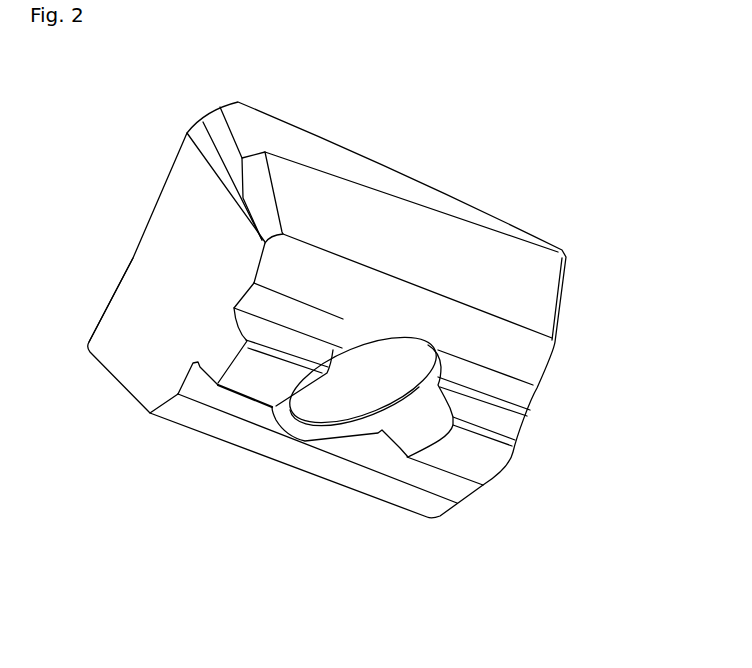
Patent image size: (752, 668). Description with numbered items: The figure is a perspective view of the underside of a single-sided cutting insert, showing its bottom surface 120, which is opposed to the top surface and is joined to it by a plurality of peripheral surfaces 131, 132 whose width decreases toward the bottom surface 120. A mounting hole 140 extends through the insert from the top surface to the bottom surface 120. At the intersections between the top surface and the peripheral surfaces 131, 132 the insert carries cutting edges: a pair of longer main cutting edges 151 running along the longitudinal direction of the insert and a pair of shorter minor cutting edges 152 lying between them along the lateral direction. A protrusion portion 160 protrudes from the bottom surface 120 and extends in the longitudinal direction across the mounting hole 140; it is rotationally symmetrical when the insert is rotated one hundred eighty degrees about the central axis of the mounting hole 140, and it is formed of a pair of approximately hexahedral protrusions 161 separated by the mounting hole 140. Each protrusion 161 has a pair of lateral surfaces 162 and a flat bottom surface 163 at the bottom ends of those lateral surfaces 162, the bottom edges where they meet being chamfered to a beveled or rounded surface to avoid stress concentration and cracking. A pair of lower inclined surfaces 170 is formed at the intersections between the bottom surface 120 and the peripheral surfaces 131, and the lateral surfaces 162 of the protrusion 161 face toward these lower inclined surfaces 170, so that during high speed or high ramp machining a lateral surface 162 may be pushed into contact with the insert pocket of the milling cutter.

The bottom surface 120 is at (507, 394).
The peripheral surface 131 is at (383, 221).
The peripheral surface 132 is at (140, 265).
The mounting hole 140 is at (392, 358).
The main cutting edge 151 is at (303, 124).
The minor cutting edge 152 is at (158, 202).
The protrusion portion 160 is at (455, 561).
The protrusion 161 is at (288, 388).
The lateral surface 162 is at (249, 329).
The flat bottom surface 163 is at (250, 378).
The lower inclined surface 170 is at (418, 313).